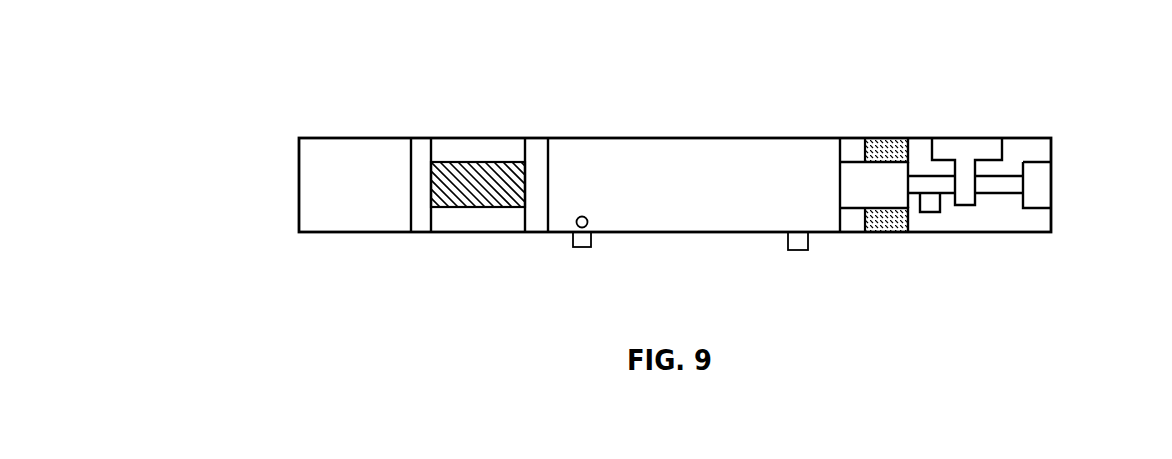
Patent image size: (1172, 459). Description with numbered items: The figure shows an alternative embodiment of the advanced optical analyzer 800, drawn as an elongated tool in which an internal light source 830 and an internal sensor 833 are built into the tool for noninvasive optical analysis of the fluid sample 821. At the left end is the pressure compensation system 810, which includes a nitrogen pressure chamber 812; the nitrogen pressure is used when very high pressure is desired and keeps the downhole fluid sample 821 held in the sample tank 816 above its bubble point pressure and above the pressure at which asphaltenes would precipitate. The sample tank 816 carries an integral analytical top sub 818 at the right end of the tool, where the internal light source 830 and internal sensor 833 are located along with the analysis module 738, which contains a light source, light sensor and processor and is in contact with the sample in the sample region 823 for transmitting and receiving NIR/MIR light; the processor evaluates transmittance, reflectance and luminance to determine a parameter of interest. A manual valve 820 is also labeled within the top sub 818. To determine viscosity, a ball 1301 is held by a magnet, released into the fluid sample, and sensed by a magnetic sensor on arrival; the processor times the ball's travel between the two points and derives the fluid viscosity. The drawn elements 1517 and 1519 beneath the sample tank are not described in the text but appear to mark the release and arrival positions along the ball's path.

The advanced optical analyzer 800 is at (578, 92).
The pressure compensation system 810 is at (547, 245).
The nitrogen pressure chamber 812 is at (362, 137).
The sample tank 816 is at (651, 138).
The fluid sample 821 is at (827, 200).
The ball 1301 is at (577, 226).
The sensor housing 1517 is at (597, 268).
The sensor 1519 is at (797, 251).
The internal light source 830 is at (878, 139).
The internal sensor 833 is at (868, 232).
The manual valve 820 is at (998, 124).
The sample region 823 is at (1005, 173).
The analysis module 738 is at (930, 212).
The analytical top sub 818 is at (1048, 256).